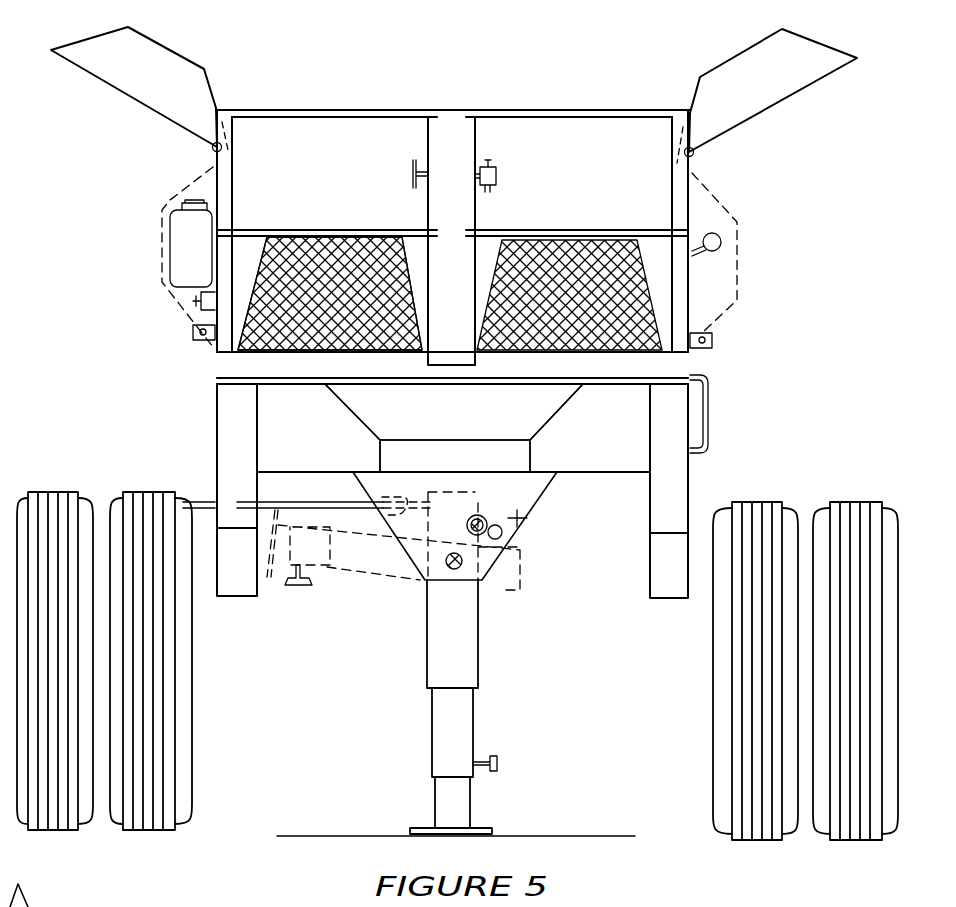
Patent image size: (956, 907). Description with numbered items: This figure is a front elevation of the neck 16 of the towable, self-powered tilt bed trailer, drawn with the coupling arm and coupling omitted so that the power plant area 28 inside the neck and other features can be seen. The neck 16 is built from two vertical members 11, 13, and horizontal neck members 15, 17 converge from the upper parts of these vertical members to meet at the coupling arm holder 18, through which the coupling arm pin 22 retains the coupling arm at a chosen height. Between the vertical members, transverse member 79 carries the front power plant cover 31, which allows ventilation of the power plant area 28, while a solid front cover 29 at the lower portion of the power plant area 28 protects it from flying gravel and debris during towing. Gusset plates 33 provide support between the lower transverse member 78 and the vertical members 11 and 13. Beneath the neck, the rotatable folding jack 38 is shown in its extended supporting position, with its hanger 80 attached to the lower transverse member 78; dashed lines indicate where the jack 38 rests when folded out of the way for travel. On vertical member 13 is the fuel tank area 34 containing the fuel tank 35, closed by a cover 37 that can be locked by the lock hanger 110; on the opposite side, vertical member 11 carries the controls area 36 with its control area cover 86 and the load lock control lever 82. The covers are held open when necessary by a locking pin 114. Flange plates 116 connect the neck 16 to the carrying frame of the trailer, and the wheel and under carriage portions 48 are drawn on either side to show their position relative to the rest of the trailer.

The vertical member 11 is at (693, 482).
The vertical member 13 is at (222, 442).
The horizontal neck member 15 is at (637, 170).
The neck 16 is at (500, 107).
The horizontal neck member 17 is at (365, 150).
The coupling arm holder 18 is at (447, 132).
The coupling arm pin 22 is at (497, 172).
The power plant area 28 is at (450, 293).
The solid front cover 29 is at (463, 398).
The front power plant cover 31 is at (311, 252).
The gusset plates 33 is at (293, 412).
The fuel tank area 34 is at (150, 273).
The fuel tank 35 is at (185, 233).
The controls area 36 is at (723, 272).
The cover 37 is at (157, 70).
The rotatable jack 38 is at (470, 658).
The wheel and under carriage portions 48 is at (193, 742).
The lower transverse member 78 is at (475, 457).
The transverse member 79 is at (502, 375).
The hanger 80 is at (538, 510).
The load lock control lever 82 is at (710, 418).
The control area cover 86 is at (733, 55).
The lock hanger 110 is at (192, 338).
The locking pin 114 is at (212, 148).
The flange plate 116 is at (242, 580).